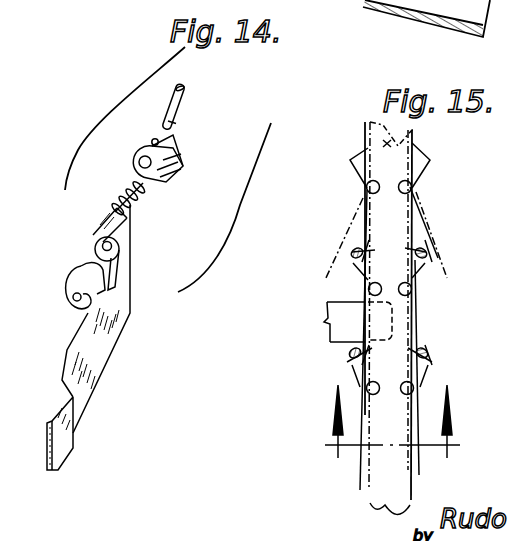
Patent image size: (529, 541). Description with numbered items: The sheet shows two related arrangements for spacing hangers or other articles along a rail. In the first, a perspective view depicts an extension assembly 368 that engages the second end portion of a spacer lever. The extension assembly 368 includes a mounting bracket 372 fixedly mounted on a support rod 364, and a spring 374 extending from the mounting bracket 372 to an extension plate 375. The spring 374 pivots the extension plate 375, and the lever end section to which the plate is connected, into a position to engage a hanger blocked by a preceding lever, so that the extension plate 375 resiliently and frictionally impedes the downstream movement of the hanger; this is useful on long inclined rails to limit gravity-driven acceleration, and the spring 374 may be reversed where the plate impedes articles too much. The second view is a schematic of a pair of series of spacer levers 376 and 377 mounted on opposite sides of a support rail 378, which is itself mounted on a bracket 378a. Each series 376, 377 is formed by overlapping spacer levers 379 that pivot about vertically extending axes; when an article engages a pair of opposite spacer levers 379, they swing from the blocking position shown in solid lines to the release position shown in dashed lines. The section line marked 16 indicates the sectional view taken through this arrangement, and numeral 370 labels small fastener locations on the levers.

In FIG. 14, the support rod 364 is at (202, 97).
In FIG. 14, the mounting bracket 372 is at (176, 152).
In FIG. 14, the spring 374 is at (146, 198).
In FIG. 14, the extension assembly 368 is at (98, 204).
In FIG. 14, the extension plate 375 is at (105, 357).
In FIG. 15, the spacer levers 379 is at (360, 152).
In FIG. 15, the series of spacer levers 376 is at (350, 189).
In FIG. 15, the series of spacer levers 377 is at (440, 218).
In FIG. 15, the rivet 370 is at (432, 242).
In FIG. 15, the bracket 378a is at (330, 324).
In FIG. 15, the support rail 378 is at (370, 497).
In FIG. 15, the section line 16- 16 is at (385, 421).